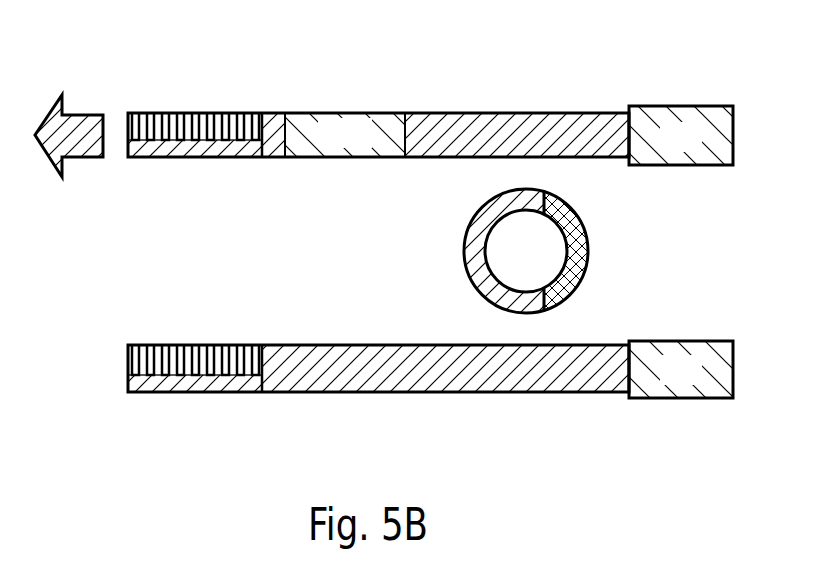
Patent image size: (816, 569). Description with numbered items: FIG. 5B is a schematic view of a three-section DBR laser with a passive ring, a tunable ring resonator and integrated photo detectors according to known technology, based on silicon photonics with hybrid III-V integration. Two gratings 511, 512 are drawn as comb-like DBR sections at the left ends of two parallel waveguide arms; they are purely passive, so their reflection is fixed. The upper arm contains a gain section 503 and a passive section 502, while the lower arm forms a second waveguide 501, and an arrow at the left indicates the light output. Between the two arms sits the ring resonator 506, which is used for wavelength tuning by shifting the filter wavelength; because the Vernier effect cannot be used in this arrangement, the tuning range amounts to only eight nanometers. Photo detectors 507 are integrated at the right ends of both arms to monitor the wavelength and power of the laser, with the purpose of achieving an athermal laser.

The second waveguide arm 501 is at (605, 392).
The first waveguide arm 502 is at (572, 113).
The gain section 503 is at (343, 113).
The ring resonator 506 is at (465, 248).
The photo detectors 507 is at (677, 106).
The grating 511 is at (203, 345).
The grating 512 is at (203, 113).